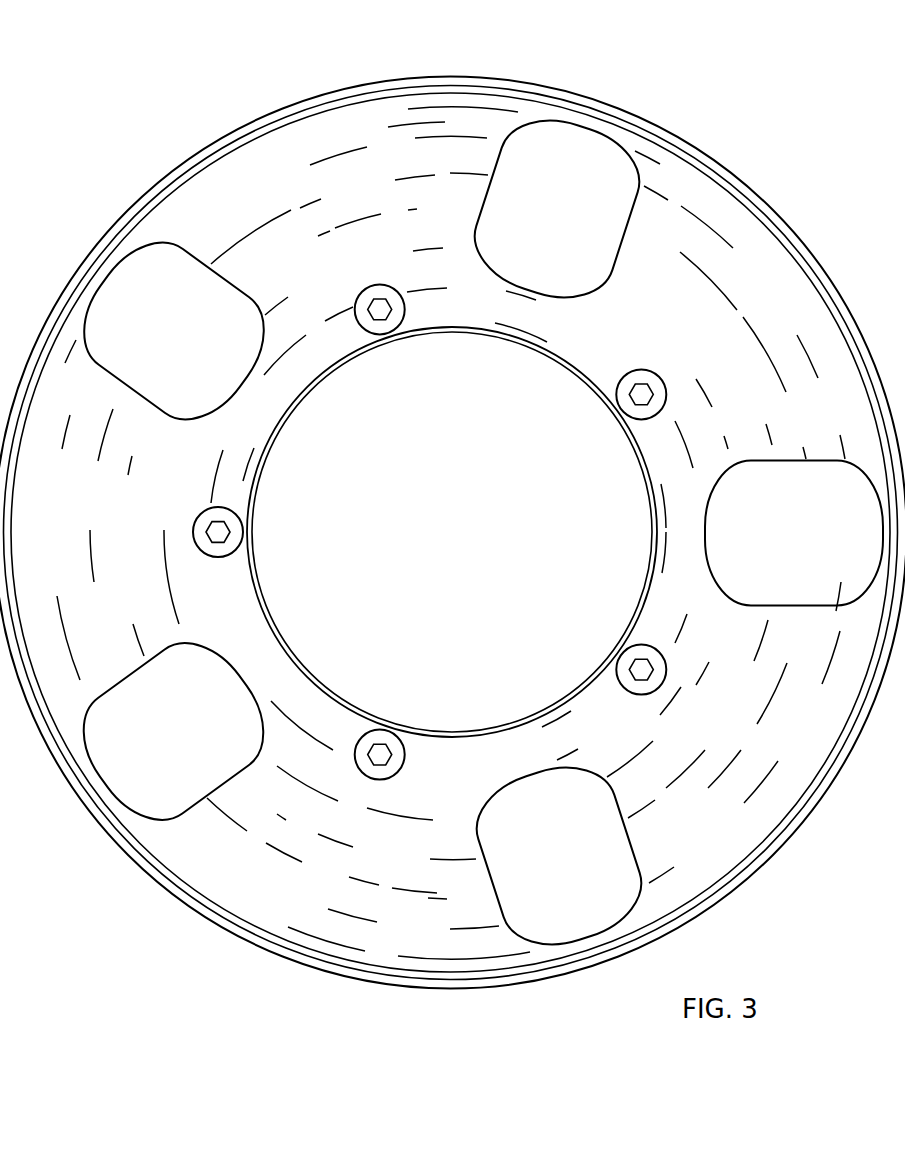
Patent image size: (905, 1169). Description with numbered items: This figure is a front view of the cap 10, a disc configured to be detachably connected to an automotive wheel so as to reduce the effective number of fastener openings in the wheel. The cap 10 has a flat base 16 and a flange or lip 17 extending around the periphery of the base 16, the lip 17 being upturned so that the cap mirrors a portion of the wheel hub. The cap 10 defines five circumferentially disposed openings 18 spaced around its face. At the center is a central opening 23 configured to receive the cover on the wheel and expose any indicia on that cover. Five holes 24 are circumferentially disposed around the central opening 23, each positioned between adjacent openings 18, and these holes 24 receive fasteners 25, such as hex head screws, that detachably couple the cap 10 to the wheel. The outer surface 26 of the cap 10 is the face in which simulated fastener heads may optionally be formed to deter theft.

The cap 10 is at (699, 72).
The base 16 is at (687, 426).
The lip 17 is at (377, 85).
The openings 18 is at (562, 211).
The central opening 23 is at (582, 366).
The holes 24 is at (375, 333).
The fasteners 25 is at (377, 307).
The outer surface 26 is at (409, 851).